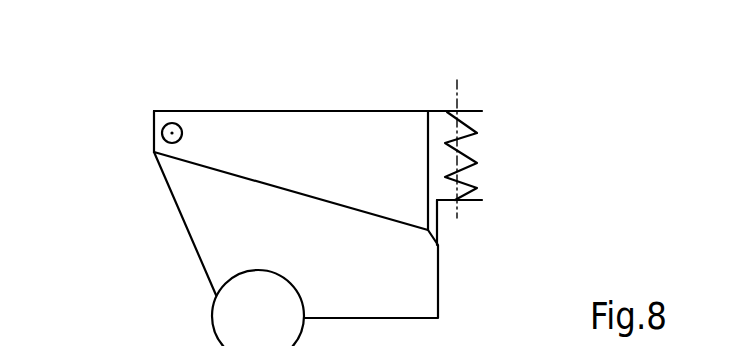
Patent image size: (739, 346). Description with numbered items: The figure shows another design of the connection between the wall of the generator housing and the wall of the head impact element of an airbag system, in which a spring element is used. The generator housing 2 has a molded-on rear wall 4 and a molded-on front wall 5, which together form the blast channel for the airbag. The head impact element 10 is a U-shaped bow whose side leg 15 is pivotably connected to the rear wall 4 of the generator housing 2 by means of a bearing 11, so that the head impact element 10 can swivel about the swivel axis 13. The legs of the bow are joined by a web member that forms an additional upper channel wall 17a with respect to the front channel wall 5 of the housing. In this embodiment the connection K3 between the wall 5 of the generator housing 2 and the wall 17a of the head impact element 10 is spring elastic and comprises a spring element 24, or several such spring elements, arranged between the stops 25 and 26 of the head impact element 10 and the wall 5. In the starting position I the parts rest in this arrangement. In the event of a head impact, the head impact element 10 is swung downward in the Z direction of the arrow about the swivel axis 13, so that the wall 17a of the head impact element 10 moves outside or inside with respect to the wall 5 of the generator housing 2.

The generator housing 2 is at (211, 320).
The rear wall 4 is at (175, 203).
The front wall 5 is at (440, 297).
The head impact element 10 is at (364, 107).
The bearing 11 is at (157, 143).
The swivel axis 13 is at (165, 123).
The side leg 15 is at (245, 130).
The upper channel wall 17a is at (428, 157).
The spring element 24 is at (474, 170).
The stop 25 is at (441, 111).
The stop 26 is at (472, 201).
The direction of the arrow Z is at (308, 165).
The starting position I is at (504, 116).
The connection K3 is at (515, 166).